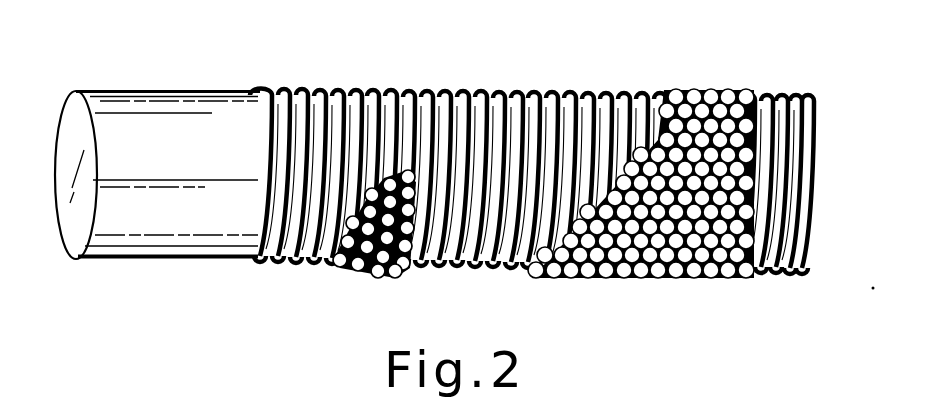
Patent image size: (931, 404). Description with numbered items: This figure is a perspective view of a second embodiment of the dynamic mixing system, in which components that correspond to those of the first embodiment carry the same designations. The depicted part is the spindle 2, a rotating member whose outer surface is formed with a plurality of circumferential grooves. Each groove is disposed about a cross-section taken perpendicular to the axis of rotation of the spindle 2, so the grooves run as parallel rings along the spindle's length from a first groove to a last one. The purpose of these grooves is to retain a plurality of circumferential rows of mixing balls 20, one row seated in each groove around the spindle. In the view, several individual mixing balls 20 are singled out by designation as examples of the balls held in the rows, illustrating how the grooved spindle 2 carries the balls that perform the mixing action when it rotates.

The spindle 2 is at (168, 110).
The mixing balls 20 is at (710, 92).